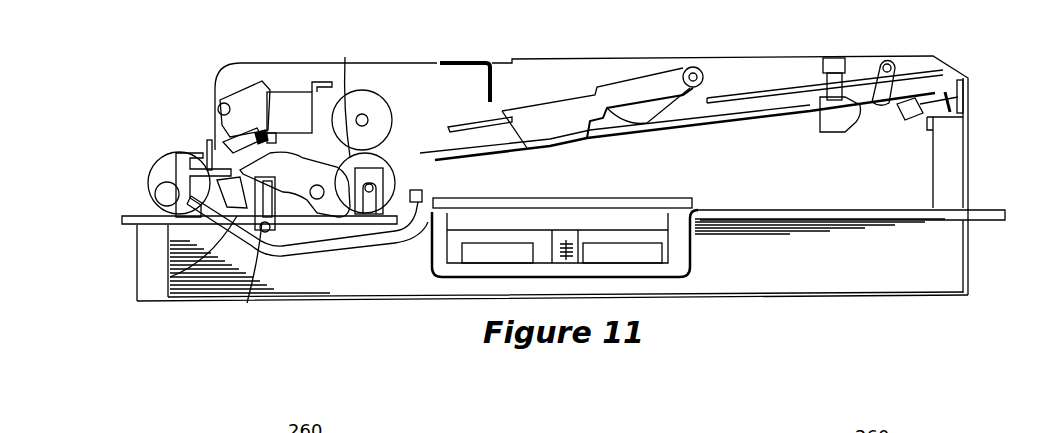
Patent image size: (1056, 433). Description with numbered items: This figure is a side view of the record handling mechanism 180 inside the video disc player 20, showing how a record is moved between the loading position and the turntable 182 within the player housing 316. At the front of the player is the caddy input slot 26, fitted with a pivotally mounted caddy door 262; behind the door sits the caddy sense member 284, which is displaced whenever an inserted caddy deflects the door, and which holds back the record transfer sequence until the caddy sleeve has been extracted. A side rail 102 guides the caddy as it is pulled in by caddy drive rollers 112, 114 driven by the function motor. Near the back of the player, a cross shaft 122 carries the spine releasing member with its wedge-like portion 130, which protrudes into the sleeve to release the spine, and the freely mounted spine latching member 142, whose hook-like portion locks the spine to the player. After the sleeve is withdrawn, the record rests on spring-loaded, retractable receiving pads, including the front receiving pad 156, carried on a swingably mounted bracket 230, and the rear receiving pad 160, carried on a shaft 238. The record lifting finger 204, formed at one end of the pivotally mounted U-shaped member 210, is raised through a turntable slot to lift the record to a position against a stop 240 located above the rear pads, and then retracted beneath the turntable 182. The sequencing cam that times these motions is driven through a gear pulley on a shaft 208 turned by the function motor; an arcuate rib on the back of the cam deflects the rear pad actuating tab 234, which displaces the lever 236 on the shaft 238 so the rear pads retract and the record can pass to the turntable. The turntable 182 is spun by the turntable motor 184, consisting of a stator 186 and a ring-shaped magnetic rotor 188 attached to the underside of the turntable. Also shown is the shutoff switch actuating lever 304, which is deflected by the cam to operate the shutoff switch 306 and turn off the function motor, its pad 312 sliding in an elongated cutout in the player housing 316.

The video disc player 20 is at (918, 285).
The caddy input slot 26 is at (972, 97).
The side rail 102 is at (772, 107).
The caddy drive roller 112 is at (391, 127).
The caddy drive roller 114 is at (380, 165).
The cross shaft 122 is at (162, 195).
The wedge-like portion 130 is at (170, 160).
The spine latching member 142 is at (162, 168).
The record receiving pad 156 is at (842, 127).
The record receiving pad 160 is at (273, 208).
The record handling mechanism 180 is at (300, 265).
The turntable 182 is at (637, 202).
The turntable motor 184 is at (677, 250).
The stator 186 is at (660, 258).
The ring-shaped magnetic rotor 188 is at (434, 254).
The record lifting finger 204 is at (423, 194).
The shaft 208 is at (364, 116).
The U-shaped member 210 is at (223, 221).
The bracket 230 is at (833, 60).
The rear pad actuating tab 234 is at (339, 97).
The lever 236 is at (170, 277).
The shaft 238 is at (247, 303).
The stop 240 is at (293, 102).
The caddy door 262 is at (967, 88).
The caddy sense member 284 is at (910, 116).
The shutoff switch actuating lever 304 is at (277, 160).
The shutoff switch 306 is at (243, 100).
The pad 312 is at (230, 140).
The player housing 316 is at (423, 72).